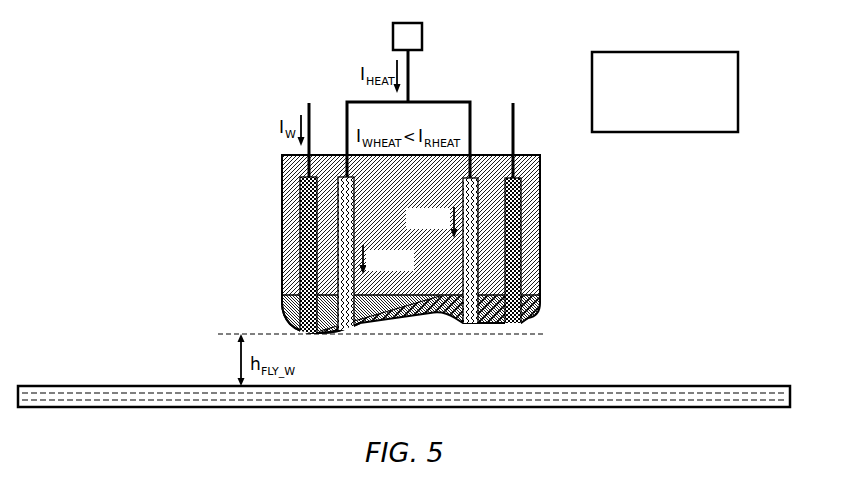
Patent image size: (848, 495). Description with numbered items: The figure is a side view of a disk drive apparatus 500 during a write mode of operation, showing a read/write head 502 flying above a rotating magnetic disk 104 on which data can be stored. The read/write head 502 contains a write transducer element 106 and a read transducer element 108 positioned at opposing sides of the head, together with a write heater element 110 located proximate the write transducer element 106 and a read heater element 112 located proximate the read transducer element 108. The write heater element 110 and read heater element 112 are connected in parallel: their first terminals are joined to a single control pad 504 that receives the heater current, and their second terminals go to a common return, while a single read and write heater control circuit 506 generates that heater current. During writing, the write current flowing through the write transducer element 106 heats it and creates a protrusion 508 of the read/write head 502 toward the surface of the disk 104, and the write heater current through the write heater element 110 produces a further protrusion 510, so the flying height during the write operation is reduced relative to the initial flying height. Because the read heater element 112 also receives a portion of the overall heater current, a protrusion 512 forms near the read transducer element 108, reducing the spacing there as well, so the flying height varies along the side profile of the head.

The rotating magnetic disk 104 is at (60, 386).
The write transducer element 106 is at (300, 210).
The read transducer element 108 is at (521, 209).
The write heater element 110 is at (337, 188).
The read heater element 112 is at (478, 195).
The disk drive apparatus 500 is at (237, 98).
The read/write head 502 is at (282, 168).
The single control pad 504 is at (393, 33).
The read and write heater control circuit 506 is at (592, 62).
The protrusion 508 is at (288, 305).
The further protrusion 510 is at (279, 324).
The protrusion 512 is at (548, 316).